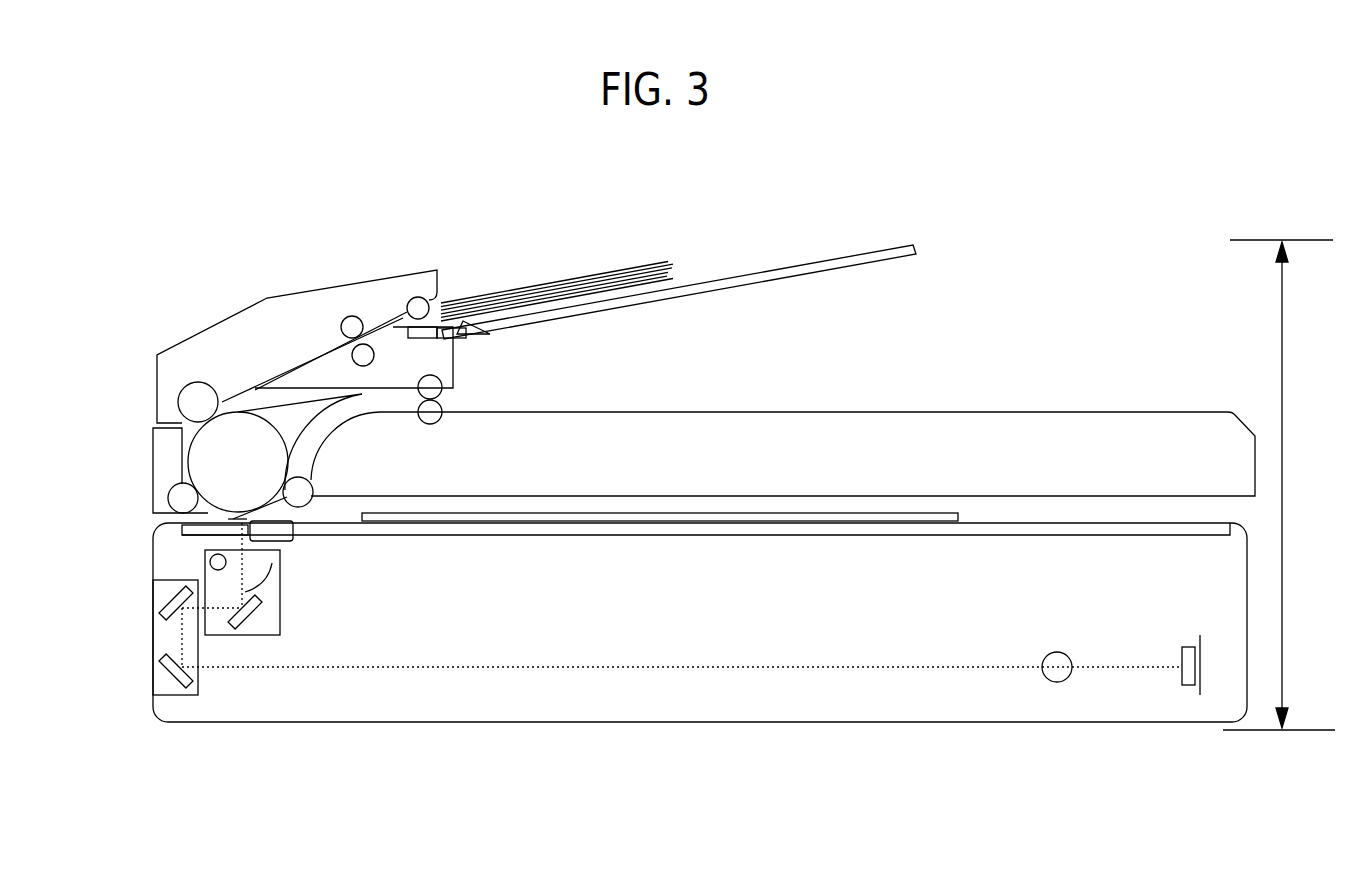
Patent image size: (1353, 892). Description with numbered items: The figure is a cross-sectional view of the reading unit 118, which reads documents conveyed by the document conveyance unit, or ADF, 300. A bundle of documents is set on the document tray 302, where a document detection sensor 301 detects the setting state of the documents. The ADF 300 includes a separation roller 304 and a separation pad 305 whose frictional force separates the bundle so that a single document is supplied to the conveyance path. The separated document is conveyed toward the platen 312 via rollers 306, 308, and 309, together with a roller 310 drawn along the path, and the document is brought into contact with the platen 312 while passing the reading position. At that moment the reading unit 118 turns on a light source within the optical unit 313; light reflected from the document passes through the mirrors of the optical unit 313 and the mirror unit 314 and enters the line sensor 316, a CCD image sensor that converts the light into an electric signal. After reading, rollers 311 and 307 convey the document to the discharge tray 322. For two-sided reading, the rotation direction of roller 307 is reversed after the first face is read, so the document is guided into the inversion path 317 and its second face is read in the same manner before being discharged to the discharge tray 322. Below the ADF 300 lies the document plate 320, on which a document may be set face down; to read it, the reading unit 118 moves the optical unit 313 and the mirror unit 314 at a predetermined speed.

The document conveyance unit 300 is at (193, 291).
The document detection sensor 301 is at (476, 334).
The document tray 302 is at (858, 253).
The separation roller 304 is at (418, 297).
The separation pad 305 is at (421, 337).
The roller 306 is at (349, 316).
The roller 307 is at (440, 421).
The roller 308 is at (197, 457).
The roller 309 is at (178, 401).
The discharge roller 310 is at (169, 500).
The roller 311 is at (312, 485).
The platen 312 is at (195, 537).
The optical unit 313 is at (281, 588).
The mirror unit 314 is at (199, 688).
The line sensor 316 is at (1184, 647).
The inversion path 317 is at (253, 408).
The document plate 320 is at (1087, 535).
The discharge tray 322 is at (745, 412).
The reading unit 118 is at (1279, 485).